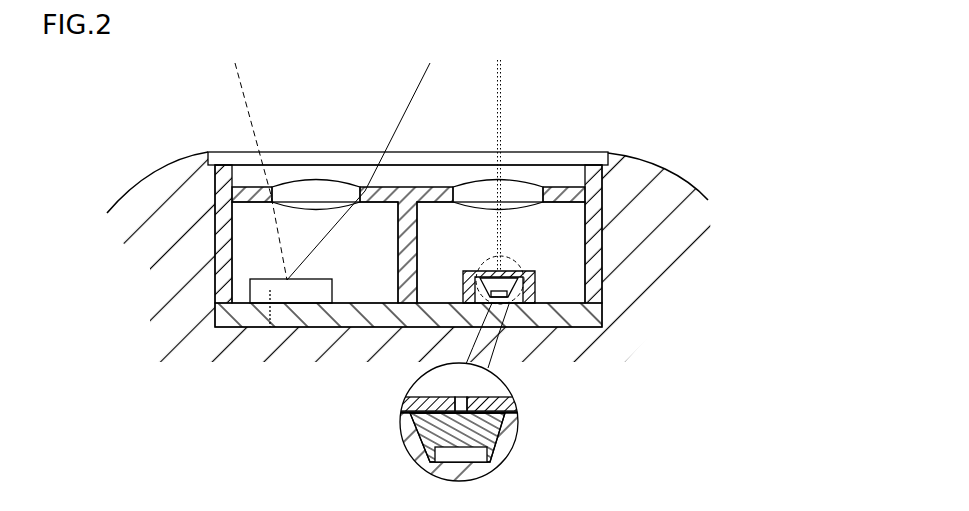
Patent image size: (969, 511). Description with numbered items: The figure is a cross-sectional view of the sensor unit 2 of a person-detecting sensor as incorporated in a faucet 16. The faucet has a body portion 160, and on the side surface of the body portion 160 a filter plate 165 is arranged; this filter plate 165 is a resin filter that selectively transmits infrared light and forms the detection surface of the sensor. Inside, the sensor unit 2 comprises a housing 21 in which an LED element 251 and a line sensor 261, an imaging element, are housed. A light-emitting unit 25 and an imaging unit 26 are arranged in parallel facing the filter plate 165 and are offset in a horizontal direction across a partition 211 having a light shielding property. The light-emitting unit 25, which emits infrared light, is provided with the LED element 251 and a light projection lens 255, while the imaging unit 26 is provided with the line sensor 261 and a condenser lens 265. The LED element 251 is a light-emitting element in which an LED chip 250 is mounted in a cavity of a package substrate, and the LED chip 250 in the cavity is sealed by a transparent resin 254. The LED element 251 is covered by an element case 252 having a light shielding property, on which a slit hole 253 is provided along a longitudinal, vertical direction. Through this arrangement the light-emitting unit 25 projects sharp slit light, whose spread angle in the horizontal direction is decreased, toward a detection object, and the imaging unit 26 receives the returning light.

The sensor unit 2 is at (610, 317).
The faucet 16 is at (158, 151).
The body portion 160 is at (670, 166).
The filter plate 165 is at (586, 153).
The housing 21 is at (608, 243).
The partition 211 is at (421, 237).
The light-emitting unit 25 is at (518, 170).
The light projection lens 255 is at (507, 185).
The imaging unit 26 is at (289, 172).
The condenser lens 265 is at (317, 187).
The line sensor 261 is at (270, 327).
The LED chip 250 is at (434, 455).
The LED element 251 is at (512, 311).
The element case 252 is at (486, 398).
The slit hole 253 is at (461, 402).
The transparent resin 254 is at (492, 429).